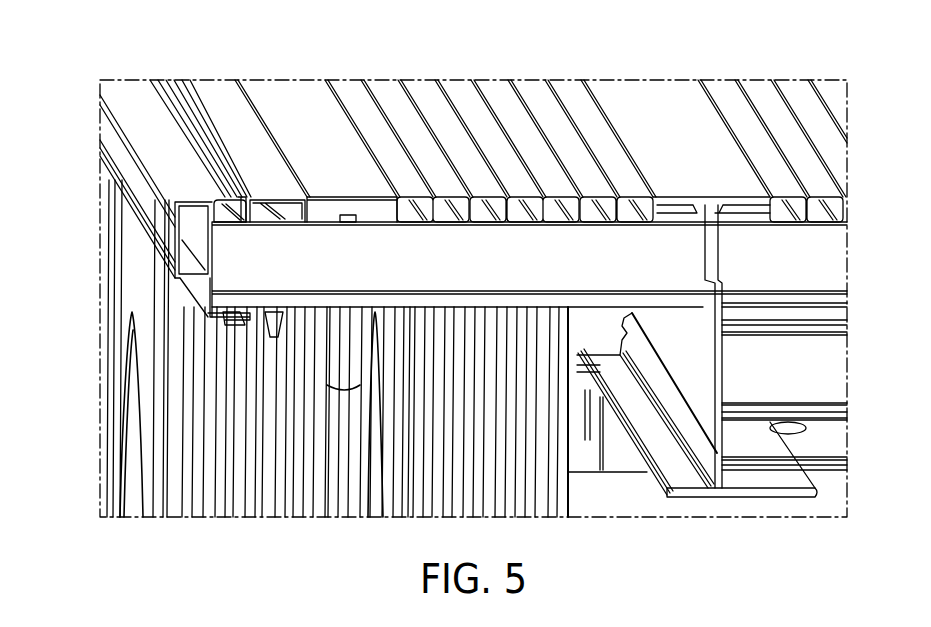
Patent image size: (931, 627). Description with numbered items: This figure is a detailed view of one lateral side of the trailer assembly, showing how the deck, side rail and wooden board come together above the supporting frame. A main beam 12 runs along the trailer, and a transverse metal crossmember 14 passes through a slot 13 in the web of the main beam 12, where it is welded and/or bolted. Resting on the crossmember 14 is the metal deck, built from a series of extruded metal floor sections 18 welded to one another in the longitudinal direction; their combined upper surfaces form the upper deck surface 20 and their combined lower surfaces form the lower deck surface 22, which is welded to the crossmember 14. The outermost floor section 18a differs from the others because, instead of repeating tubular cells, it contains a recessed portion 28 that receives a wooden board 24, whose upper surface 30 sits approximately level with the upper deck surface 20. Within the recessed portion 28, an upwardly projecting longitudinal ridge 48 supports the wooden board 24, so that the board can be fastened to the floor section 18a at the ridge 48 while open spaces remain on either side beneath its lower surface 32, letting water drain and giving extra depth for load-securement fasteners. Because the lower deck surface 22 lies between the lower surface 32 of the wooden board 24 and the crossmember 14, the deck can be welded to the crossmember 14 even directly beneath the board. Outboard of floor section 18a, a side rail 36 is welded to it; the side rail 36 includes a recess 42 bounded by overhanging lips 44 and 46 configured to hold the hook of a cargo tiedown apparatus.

The main beam 12 is at (697, 370).
The slot 13 is at (703, 279).
The crossmember 14 is at (482, 268).
The metal floor section 18 is at (580, 105).
The floor section 18a is at (217, 95).
The upper deck surface 20 is at (512, 110).
The lower deck surface 22 is at (580, 225).
The wooden board 24 is at (285, 92).
The recessed portion 28 is at (388, 205).
The upper surface 30 is at (312, 105).
The lower surface 32 is at (320, 228).
The side rail 36 is at (137, 112).
The recess 42 is at (225, 222).
The overhanging lip 44 is at (220, 203).
The overhanging lip 46 is at (238, 197).
The ridge 48 is at (352, 222).